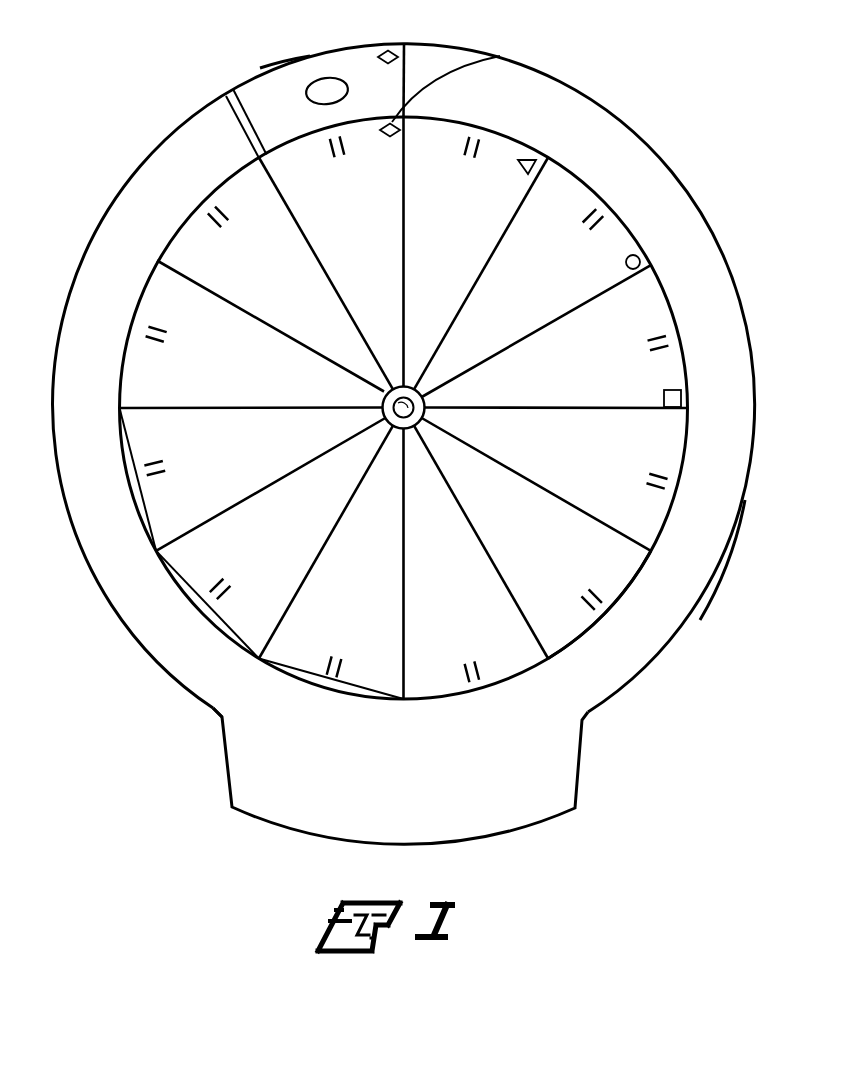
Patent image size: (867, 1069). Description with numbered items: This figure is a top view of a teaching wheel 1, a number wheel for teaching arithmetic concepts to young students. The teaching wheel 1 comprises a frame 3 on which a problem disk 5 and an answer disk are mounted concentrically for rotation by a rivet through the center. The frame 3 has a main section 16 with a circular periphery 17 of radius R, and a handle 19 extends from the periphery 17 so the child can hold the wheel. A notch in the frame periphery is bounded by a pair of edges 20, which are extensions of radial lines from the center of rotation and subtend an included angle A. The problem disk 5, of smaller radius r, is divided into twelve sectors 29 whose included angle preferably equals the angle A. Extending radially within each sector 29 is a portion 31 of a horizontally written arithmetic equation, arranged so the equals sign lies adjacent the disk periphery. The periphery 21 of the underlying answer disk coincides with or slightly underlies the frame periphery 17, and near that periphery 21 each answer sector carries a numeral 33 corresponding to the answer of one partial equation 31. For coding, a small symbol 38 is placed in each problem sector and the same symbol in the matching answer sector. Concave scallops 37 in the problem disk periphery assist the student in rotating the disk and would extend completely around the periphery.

The teaching wheel 1 is at (152, 92).
The frame 3 is at (610, 94).
The problem disk 5 is at (361, 112).
The main section 16 is at (605, 688).
The circular periphery 17 is at (729, 548).
The handle 19 is at (555, 764).
The edges 20 is at (249, 110).
The periphery of the answer disk 21 is at (285, 63).
The sectors 29 is at (315, 396).
The portion of arithmetic equation 31 is at (587, 578).
The numeral 33 is at (312, 80).
The concave scallops 37 is at (147, 506).
The symbol 38 is at (388, 46).
The included angle A is at (514, 478).